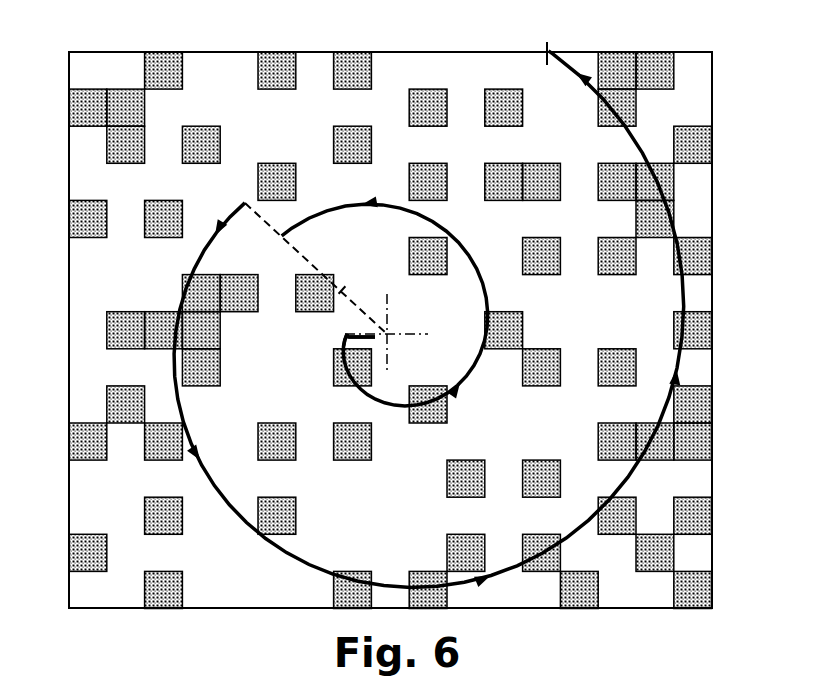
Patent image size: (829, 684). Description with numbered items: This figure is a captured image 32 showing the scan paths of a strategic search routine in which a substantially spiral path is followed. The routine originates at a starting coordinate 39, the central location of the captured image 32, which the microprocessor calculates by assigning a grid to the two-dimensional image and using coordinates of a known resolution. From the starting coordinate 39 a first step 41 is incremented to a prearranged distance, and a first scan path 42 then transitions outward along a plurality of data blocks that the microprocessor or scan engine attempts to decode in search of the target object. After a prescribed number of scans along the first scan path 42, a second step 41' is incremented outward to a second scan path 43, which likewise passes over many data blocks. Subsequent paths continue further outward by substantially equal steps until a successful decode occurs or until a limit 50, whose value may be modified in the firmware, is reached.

The captured image 32 is at (714, 95).
The starting coordinate 39 is at (392, 323).
The first step 41 is at (391, 358).
The second step 41' is at (316, 268).
The first scan path 42 is at (477, 362).
The second scan path 43 is at (268, 554).
The limit 50 is at (544, 45).